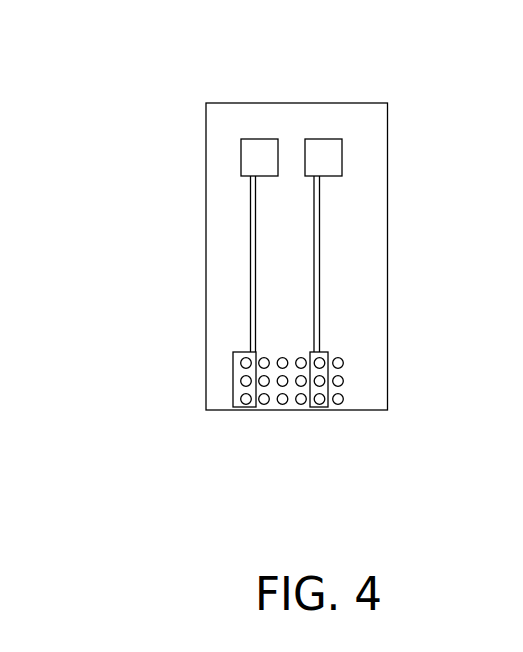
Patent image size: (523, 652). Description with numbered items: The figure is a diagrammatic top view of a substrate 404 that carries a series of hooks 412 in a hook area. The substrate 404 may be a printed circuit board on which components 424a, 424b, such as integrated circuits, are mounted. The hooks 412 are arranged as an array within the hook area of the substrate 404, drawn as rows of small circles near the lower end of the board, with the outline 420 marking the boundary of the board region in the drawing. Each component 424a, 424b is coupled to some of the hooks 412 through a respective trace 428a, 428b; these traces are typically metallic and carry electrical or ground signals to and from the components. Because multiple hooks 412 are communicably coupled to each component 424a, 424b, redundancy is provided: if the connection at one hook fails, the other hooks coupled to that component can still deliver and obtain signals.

The substrate 404 is at (113, 40).
The substrate 420 is at (388, 238).
The component 424a is at (257, 139).
The component 424b is at (342, 157).
The trace 428a is at (250, 247).
The trace 428b is at (319, 313).
The hooks 412 is at (244, 359).